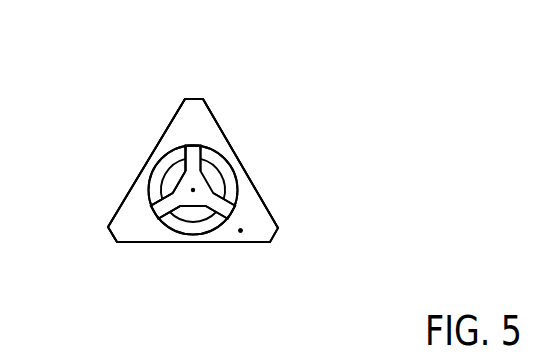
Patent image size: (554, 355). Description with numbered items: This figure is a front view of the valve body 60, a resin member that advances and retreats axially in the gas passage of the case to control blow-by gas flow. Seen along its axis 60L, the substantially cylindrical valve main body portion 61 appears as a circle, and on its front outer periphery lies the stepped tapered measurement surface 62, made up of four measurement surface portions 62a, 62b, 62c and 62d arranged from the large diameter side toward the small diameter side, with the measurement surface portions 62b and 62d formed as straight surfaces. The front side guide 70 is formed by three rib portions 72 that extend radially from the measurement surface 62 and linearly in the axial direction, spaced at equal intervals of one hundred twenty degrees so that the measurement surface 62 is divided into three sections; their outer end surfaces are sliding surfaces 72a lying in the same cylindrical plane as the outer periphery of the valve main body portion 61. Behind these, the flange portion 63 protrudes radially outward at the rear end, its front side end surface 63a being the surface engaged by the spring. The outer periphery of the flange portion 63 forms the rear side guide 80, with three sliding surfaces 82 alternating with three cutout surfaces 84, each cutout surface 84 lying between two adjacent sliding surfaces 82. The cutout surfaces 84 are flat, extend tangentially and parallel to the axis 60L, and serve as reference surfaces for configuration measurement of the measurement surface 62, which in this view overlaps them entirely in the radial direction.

The valve body 60 is at (235, 116).
The axis of the valve body 60L is at (193, 193).
The valve main body portion 61 is at (222, 154).
The measurement surface 62 is at (160, 167).
The measurement surface portion 62a is at (182, 167).
The measurement surface portion 62b is at (171, 187).
The measurement surface portion 62c is at (162, 208).
The measurement surface portion 62d is at (184, 172).
The flange portion 63 is at (241, 231).
The front side end surface of the flange portion 63a is at (300, 261).
The front side guide 70 is at (222, 228).
The rib portions 72 is at (187, 152).
The sliding surfaces 72a is at (198, 152).
The rear side guide 80 is at (271, 204).
The sliding surfaces 82 is at (193, 98).
The cutout surfaces 84 is at (145, 167).